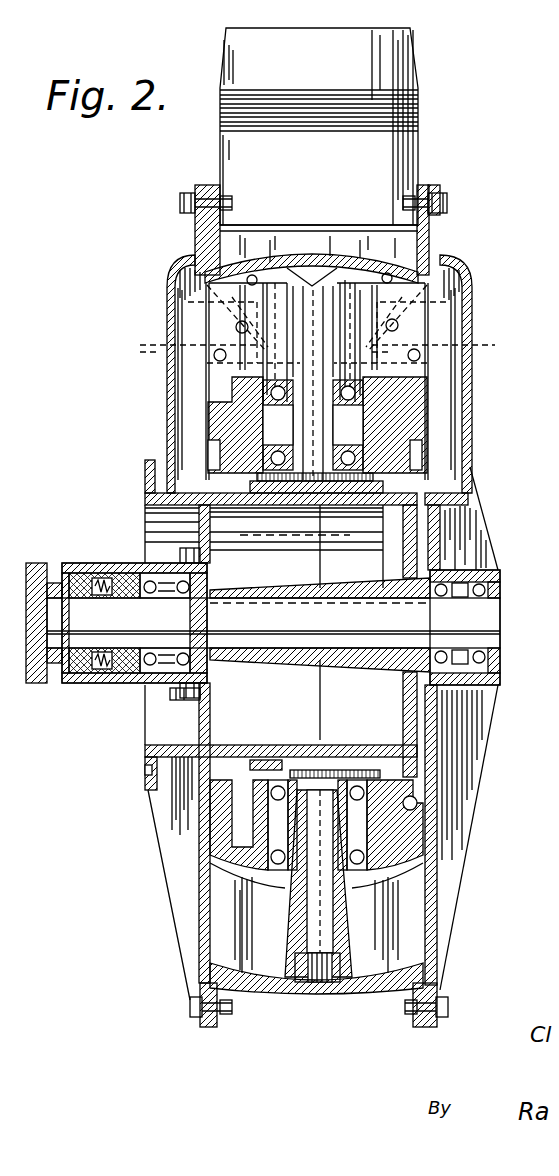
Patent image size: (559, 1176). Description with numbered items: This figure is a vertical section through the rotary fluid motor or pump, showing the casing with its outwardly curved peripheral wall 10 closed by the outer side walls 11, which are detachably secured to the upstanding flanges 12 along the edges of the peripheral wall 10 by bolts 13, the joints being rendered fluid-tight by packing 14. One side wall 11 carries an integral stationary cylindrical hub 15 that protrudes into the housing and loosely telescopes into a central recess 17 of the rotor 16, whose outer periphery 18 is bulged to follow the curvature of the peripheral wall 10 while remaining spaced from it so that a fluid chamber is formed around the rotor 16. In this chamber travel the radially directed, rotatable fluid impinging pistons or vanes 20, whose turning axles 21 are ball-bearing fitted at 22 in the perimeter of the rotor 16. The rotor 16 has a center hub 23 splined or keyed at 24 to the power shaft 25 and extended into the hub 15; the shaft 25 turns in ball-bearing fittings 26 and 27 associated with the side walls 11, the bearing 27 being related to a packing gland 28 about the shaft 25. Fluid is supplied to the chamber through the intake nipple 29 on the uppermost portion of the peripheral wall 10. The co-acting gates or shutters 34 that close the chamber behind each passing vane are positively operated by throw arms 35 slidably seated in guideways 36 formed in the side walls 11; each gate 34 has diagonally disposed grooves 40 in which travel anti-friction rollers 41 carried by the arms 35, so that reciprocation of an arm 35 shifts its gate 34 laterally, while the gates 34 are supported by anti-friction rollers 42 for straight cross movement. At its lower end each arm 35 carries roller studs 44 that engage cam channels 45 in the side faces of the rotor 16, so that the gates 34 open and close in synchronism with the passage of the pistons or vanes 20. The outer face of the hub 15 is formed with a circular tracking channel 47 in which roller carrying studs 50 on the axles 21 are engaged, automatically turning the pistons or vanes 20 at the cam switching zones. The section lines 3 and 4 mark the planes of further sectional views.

The section line 3- 3 is at (207, 180).
The section line 4- 4 is at (101, 326).
The peripheral wall 10 is at (286, 996).
The outer side walls 11 is at (437, 540).
The upstanding flanges 12 is at (222, 1030).
The bolts 13 is at (188, 205).
The packing 14 is at (445, 238).
The stationary cylindrical hub 15 is at (197, 472).
The rotor 16 is at (410, 835).
The central recess 17 is at (393, 750).
The outer periphery 18 is at (425, 885).
The pistons or vanes 20 is at (316, 258).
The turning axles 21 is at (310, 905).
The ball-bearing fitting 22 is at (228, 790).
The center hub 23 is at (437, 690).
The spline or key 24 is at (345, 590).
The power shaft 25 is at (273, 623).
The ball-bearing fitting 26 is at (498, 600).
The ball-bearing fitting 27 is at (147, 660).
The packing gland 28 is at (110, 568).
The intake nipple 29 is at (408, 140).
The gates or shutters 34 is at (185, 376).
The throw arms 35 is at (185, 393).
The guideways 36 is at (175, 283).
The diagonally disposed grooves 40 is at (167, 310).
The anti-friction rollers 41 is at (315, 337).
The anti-friction rollers 42 is at (319, 348).
The roller carrying studs 44 is at (192, 464).
The cam channels 45 is at (423, 428).
The circular tracking channel 47 is at (283, 500).
The roller carrying studs 50 is at (340, 503).